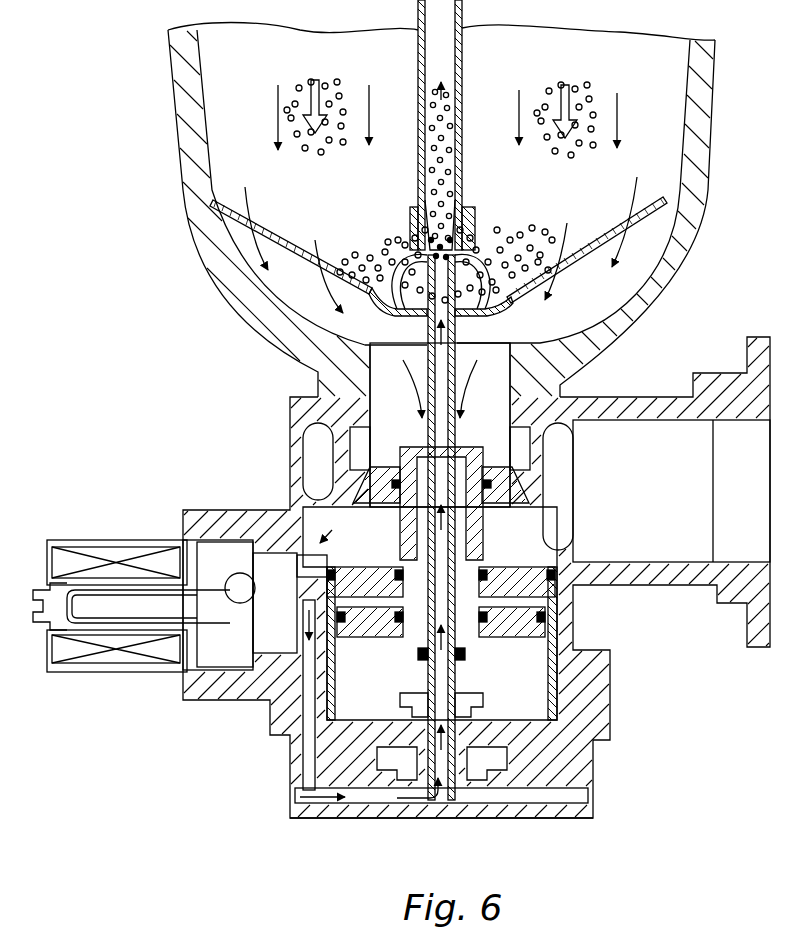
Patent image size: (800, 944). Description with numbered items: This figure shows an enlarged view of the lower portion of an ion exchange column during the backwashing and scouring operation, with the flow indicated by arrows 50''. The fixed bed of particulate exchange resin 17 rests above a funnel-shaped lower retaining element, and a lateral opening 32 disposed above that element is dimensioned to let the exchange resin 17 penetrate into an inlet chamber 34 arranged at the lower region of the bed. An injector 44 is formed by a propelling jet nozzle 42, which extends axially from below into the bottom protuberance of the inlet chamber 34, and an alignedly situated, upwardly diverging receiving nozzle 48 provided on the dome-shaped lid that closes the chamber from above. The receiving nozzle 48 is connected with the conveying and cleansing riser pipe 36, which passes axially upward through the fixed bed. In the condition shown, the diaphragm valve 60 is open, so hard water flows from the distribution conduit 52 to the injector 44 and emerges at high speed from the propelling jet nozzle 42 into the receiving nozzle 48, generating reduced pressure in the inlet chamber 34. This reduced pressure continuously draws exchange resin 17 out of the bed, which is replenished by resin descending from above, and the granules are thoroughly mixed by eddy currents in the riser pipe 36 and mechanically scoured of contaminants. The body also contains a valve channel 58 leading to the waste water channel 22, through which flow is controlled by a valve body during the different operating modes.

The conveying and cleansing riser pipe 36 is at (418, 53).
The flow arrows 50'' is at (441, 420).
The receiving nozzle 48 is at (464, 194).
The exchange resin 17 is at (388, 233).
The injector 44 is at (427, 248).
The inlet chamber 34 is at (490, 243).
The propelling jet nozzle 42 is at (398, 306).
The lateral opening 32 is at (513, 300).
The diaphragm valve 60 is at (250, 583).
The valve channel 58 is at (540, 523).
The distribution conduit 52 is at (677, 540).
The waste water channel 22 is at (543, 795).